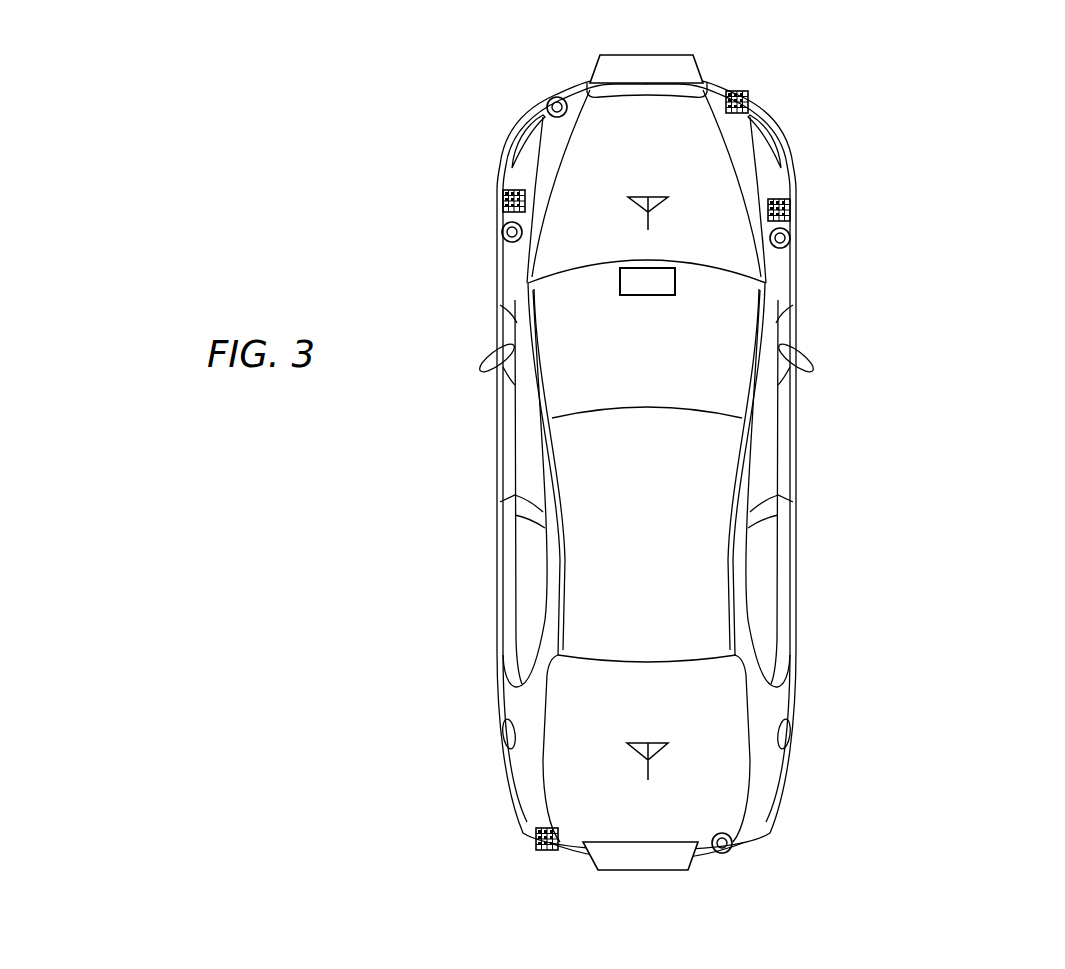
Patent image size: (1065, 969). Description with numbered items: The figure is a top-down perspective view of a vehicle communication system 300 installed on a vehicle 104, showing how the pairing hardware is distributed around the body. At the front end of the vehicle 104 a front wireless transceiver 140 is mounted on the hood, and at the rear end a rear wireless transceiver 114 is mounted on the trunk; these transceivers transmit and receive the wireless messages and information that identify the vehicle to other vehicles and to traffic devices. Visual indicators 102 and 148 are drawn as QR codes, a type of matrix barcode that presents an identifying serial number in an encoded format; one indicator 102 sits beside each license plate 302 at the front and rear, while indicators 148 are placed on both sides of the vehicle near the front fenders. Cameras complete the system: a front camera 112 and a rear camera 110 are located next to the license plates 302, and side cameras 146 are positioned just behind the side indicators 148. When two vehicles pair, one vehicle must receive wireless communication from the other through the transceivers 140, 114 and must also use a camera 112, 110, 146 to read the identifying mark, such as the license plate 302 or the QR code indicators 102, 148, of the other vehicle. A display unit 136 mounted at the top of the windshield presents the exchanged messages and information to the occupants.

The vehicle communication system 300 is at (920, 150).
The vehicle 104 is at (796, 430).
The license plate 302 is at (696, 64).
The front camera 112 is at (548, 102).
The visual indicator 102 is at (750, 93).
The visual indicator 148 is at (502, 205).
The side camera 146 is at (502, 232).
The front wireless transceiver 140 is at (662, 202).
The display unit 136 is at (660, 295).
The rear wireless transceiver 114 is at (660, 742).
The rear camera 110 is at (733, 850).